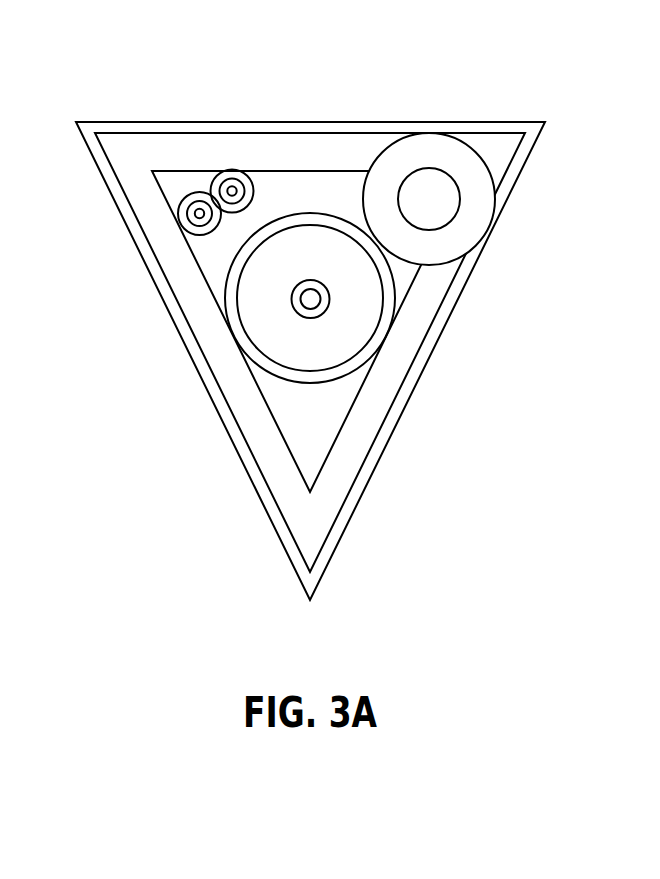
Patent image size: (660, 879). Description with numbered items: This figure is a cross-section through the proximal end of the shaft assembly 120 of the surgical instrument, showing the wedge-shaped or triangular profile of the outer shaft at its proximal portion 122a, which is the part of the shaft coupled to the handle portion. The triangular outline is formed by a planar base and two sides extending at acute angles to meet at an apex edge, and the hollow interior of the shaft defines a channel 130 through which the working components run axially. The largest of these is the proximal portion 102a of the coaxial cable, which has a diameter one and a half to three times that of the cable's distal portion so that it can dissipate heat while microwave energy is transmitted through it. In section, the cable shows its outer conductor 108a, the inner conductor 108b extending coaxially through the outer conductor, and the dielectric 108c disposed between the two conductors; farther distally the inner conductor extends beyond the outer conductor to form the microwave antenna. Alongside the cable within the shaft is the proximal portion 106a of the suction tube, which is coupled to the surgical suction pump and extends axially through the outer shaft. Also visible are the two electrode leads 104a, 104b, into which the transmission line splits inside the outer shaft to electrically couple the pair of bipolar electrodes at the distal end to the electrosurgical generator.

The shaft assembly 120 is at (190, 466).
The proximal portion of the outer shaft 122a is at (208, 370).
The proximal portion of the coaxial cable 102a is at (230, 272).
The channel 130 is at (308, 438).
The first electrode lead 104a is at (220, 187).
The second electrode lead 104b is at (190, 215).
The proximal portion of the suction tube 106a is at (450, 157).
The outer conductor 108a is at (395, 313).
The inner conductor 108b is at (298, 285).
The dielectric 108c is at (347, 334).